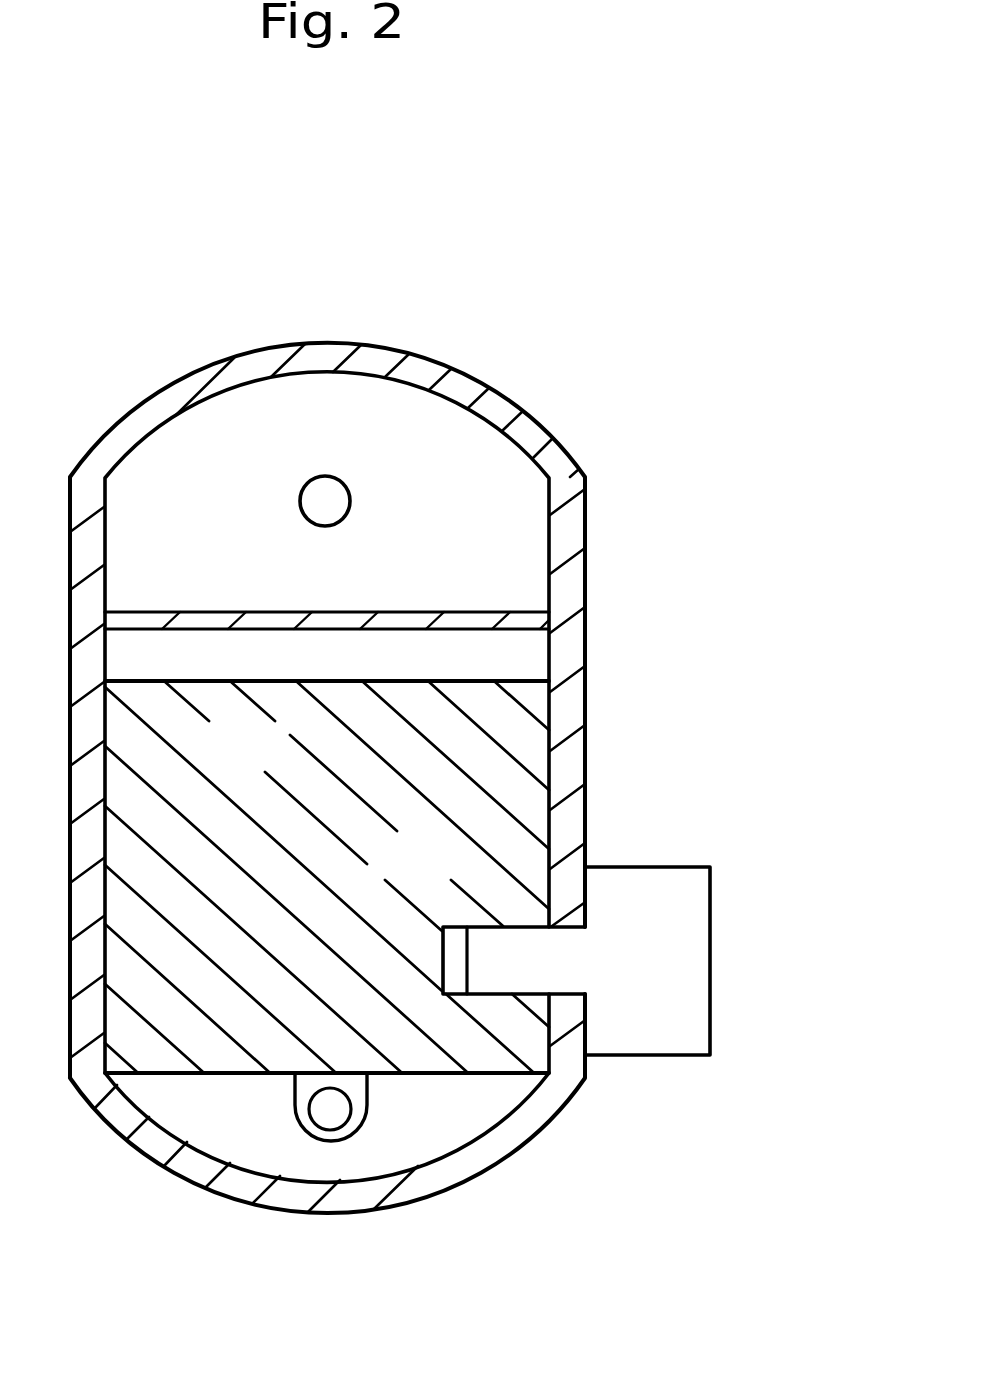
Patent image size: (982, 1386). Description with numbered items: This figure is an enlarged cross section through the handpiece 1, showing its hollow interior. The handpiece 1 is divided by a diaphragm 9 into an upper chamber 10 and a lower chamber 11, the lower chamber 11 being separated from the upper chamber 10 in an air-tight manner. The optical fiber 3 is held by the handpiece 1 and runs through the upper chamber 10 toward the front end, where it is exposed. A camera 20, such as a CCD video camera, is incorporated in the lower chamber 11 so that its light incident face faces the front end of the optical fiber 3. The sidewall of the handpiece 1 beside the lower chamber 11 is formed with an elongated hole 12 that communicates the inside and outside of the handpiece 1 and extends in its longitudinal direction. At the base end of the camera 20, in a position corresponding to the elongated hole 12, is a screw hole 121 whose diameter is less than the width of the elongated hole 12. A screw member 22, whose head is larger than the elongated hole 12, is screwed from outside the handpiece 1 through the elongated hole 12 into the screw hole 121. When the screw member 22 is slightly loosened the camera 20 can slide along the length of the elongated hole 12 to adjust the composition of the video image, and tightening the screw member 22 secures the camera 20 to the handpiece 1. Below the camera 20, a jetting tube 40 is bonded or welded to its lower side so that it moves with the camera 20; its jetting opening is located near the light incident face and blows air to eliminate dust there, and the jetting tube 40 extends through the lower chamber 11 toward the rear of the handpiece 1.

The handpiece 1 is at (193, 372).
The optical fiber 3 is at (324, 480).
The diaphragm 9 is at (213, 611).
The upper chamber 10 is at (495, 483).
The lower chamber 11 is at (523, 657).
The elongated hole 12 is at (573, 937).
The screw hole 121 is at (452, 940).
The camera 20 is at (283, 768).
The screw member 22 is at (680, 988).
The jetting tube 40 is at (340, 1142).